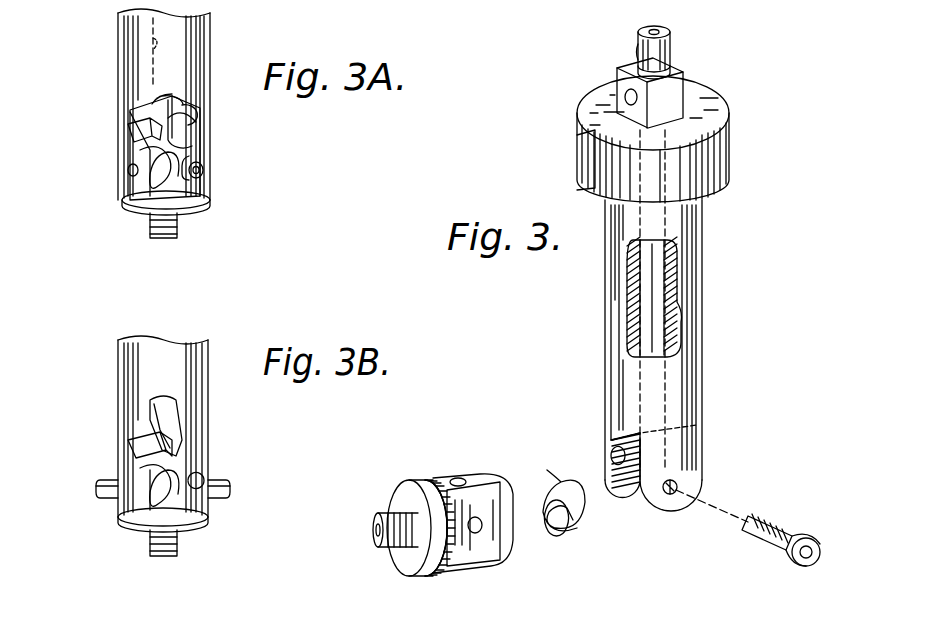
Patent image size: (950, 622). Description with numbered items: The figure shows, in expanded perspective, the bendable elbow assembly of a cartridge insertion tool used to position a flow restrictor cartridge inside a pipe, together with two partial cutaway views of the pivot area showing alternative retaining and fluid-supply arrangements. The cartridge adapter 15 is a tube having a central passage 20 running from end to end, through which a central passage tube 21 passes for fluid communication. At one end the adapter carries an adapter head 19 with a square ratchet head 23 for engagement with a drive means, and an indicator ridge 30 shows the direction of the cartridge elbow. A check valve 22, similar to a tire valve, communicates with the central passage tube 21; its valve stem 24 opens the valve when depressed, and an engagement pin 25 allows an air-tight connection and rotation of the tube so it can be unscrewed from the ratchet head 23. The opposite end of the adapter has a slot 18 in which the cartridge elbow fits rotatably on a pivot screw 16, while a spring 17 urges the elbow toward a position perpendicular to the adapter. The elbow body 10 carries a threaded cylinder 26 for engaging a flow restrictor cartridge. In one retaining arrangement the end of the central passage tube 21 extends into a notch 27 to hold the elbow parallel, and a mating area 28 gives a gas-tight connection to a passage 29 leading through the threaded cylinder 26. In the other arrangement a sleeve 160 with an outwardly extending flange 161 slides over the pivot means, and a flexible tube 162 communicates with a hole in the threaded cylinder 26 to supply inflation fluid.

In FIG. 3A, the pivot body 10 is at (128, 206).
In FIG. 3, the pivot body 10 is at (500, 564).
In FIG. 3A, the cartridge adapter 15 is at (211, 38).
In FIG. 3B, the cartridge adapter 15 is at (206, 350).
In FIG. 3, the cartridge adapter 15 is at (700, 236).
In FIG. 3A, the pivot screw 16 is at (202, 174).
In FIG. 3, the pivot screw 16 is at (778, 522).
In FIG. 3A, the spring 17 is at (142, 190).
In FIG. 3B, the spring 17 is at (138, 522).
In FIG. 3, the spring 17 is at (583, 528).
In FIG. 3A, the slot 18 is at (129, 124).
In FIG. 3B, the slot 18 is at (127, 444).
In FIG. 3, the slot 18 is at (608, 460).
In FIG. 3, the adapter head 19 is at (730, 168).
In FIG. 3A, the central passage 20 is at (150, 43).
In FIG. 3, the central passage 20 is at (657, 325).
In FIG. 3A, the central passage tube 21 is at (163, 107).
In FIG. 3, the central passage tube 21 is at (648, 308).
In FIG. 3, the check valve 22 is at (672, 49).
In FIG. 3, the ratchet head 23 is at (676, 100).
In FIG. 3, the valve stem 24 is at (657, 32).
In FIG. 3, the engagement pin 25 is at (636, 52).
In FIG. 3A, the threaded cylinder 26 is at (172, 236).
In FIG. 3B, the threaded cylinder 26 is at (168, 560).
In FIG. 3, the threaded cylinder 26 is at (372, 529).
In FIG. 3A, the notch 27 is at (178, 122).
In FIG. 3, the notch 27 is at (511, 536).
In FIG. 3A, the mating area 28 is at (128, 168).
In FIG. 3, the mating area 28 is at (459, 478).
In FIG. 3, the passage 29 is at (410, 488).
In FIG. 3, the indicator ridge 30 is at (578, 155).
In FIG. 3B, the sleeve 160 is at (119, 520).
In FIG. 3B, the outwardly extending flange 161 is at (104, 498).
In FIG. 3B, the flexible tube 162 is at (172, 418).